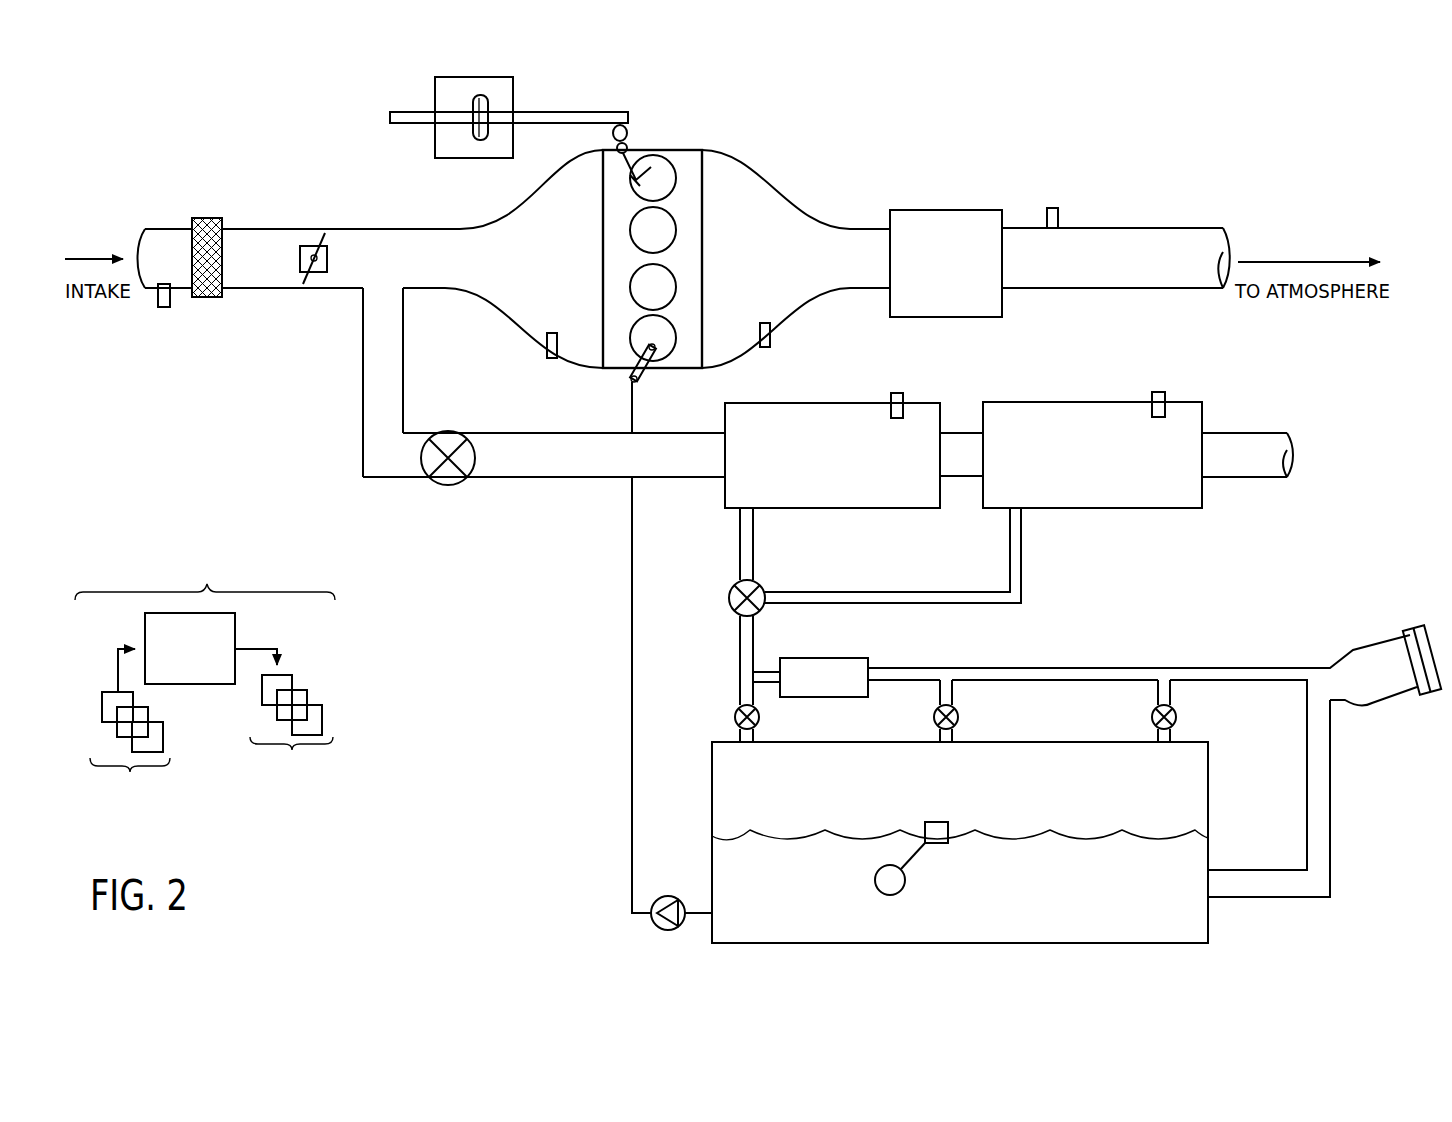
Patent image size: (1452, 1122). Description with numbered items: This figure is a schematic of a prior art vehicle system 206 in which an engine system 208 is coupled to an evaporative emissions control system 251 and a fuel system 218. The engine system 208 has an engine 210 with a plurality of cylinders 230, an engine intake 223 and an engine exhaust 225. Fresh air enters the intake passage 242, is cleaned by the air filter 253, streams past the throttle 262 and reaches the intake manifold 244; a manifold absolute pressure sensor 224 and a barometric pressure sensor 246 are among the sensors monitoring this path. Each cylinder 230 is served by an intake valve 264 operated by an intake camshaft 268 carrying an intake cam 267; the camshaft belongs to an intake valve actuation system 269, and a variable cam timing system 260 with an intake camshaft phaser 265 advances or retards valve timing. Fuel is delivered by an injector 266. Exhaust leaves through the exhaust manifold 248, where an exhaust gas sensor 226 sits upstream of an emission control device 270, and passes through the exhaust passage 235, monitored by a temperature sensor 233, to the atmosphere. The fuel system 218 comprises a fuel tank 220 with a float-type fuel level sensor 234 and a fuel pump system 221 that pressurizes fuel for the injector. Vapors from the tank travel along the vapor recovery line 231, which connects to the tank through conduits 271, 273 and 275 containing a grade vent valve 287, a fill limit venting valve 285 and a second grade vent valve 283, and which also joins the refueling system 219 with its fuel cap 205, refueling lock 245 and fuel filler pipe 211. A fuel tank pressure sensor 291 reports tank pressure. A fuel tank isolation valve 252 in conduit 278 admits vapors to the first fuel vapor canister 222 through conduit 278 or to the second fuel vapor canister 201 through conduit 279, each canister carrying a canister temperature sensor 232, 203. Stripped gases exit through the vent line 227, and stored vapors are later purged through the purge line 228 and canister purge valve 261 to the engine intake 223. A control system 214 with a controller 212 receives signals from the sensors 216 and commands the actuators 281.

The vehicle system 206 is at (152, 148).
The air filter 253 is at (212, 218).
The throttle 262 is at (330, 263).
The barometric pressure sensor 246 is at (164, 307).
The intake passage 242 is at (273, 290).
The purge line 228 is at (366, 384).
The vent line 227 is at (589, 468).
The canister purge valve 261 is at (452, 432).
The intake valve actuation system 269 is at (385, 98).
The variable cam timing system 260 is at (515, 90).
The intake camshaft 268 is at (578, 112).
The intake cam 267 is at (630, 129).
The intake camshaft phaser 265 is at (481, 141).
The intake valve 264 is at (637, 170).
The engine intake 223 is at (447, 198).
The cylinders 230 is at (680, 173).
The intake manifold 244 is at (529, 270).
The exhaust manifold 248 is at (759, 270).
The engine 210 is at (703, 290).
The manifold absolute pressure sensor 224 is at (547, 340).
The exhaust gas sensor 226 is at (771, 328).
The fuel injector 266 is at (651, 376).
The engine exhaust 225 is at (886, 152).
The engine system 208 is at (1021, 143).
The emission control device 270 is at (932, 208).
The temperature sensor 233 is at (1047, 218).
The exhaust passage 235 is at (1173, 228).
The evaporative emissions control system 251 is at (1262, 361).
The canister temperature sensor 232 is at (897, 392).
The canister temperature sensor 203 is at (1157, 391).
The first fuel vapor canister 222 is at (895, 508).
The second fuel vapor canister 201 is at (1157, 508).
The conduit 278 is at (753, 560).
The conduit 279 is at (883, 591).
The fuel tank isolation valve 252 is at (729, 592).
The fuel tank pressure sensor 291 is at (833, 658).
The grade vent valve 287 is at (734, 718).
The conduit 271 is at (753, 697).
The conduit 273 is at (940, 697).
The fill limit venting valve 285 is at (958, 720).
The conduit 275 is at (1157, 698).
The grade vent valve 283 is at (1177, 719).
The vapor recovery line 231 is at (1228, 667).
The fuel cap 205 is at (1415, 628).
The refueling system 219 is at (1383, 619).
The fuel filler pipe 211 is at (1333, 785).
The refueling lock 245 is at (1415, 700).
The fuel tank 220 is at (1208, 802).
The fuel level sensor 234 is at (936, 822).
The fuel pump system 221 is at (663, 896).
The fuel system 218 is at (1355, 901).
The control system 214 is at (205, 569).
The controller 212 is at (175, 663).
The sensors 216 is at (130, 733).
The actuators 281 is at (284, 724).